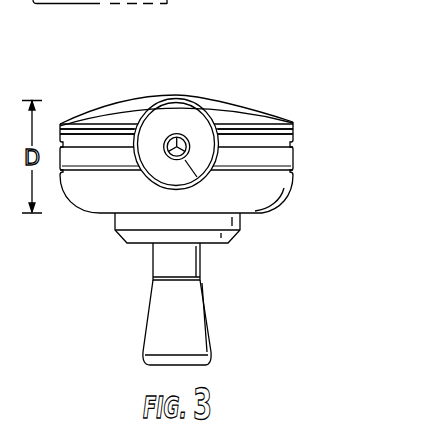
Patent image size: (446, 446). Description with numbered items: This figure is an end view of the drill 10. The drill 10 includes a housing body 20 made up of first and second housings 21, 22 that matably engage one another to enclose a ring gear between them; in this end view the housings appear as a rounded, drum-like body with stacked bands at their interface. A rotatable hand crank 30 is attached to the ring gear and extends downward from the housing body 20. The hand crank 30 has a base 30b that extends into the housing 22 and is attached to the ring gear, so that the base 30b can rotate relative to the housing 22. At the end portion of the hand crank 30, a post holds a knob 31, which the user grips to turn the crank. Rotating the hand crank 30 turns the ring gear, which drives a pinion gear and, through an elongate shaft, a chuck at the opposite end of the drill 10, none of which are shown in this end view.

The drill 10 is at (160, 81).
The housing body 20 is at (243, 111).
The first housing 21 is at (286, 133).
The second housing 22 is at (272, 192).
The base 30b is at (130, 225).
The hand crank 30 is at (165, 263).
The knob 31 is at (155, 338).